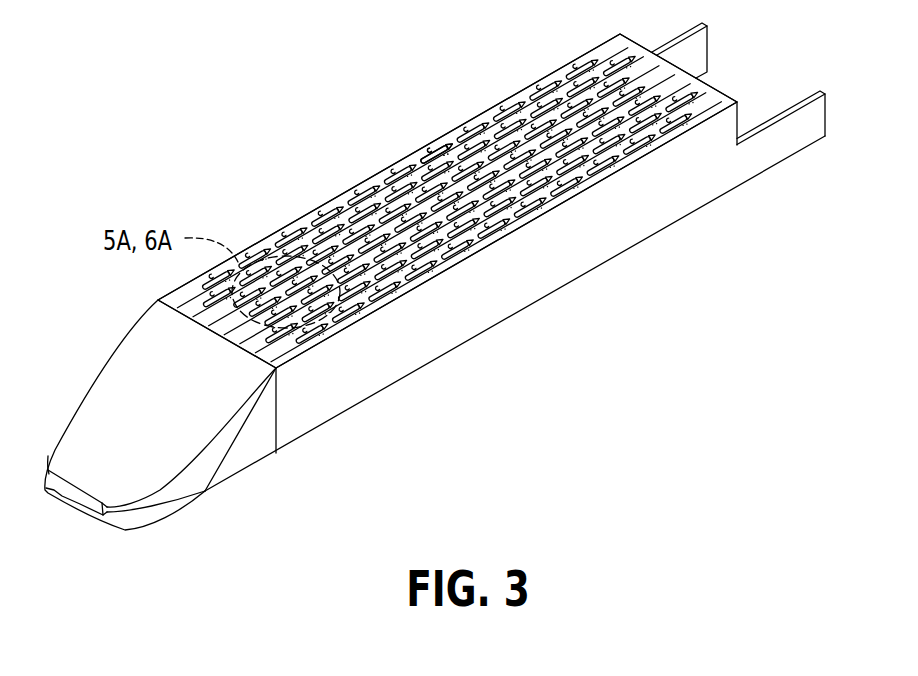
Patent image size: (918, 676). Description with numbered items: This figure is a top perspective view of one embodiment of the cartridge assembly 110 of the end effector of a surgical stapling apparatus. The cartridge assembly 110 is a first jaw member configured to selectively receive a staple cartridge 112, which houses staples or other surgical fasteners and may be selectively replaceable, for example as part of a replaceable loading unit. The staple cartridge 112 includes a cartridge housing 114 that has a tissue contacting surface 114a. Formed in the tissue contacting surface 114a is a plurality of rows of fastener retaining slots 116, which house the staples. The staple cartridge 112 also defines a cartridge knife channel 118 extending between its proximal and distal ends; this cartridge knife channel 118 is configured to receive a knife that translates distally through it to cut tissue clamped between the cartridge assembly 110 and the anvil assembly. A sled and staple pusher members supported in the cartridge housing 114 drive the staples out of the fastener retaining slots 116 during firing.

The cartridge assembly 110 is at (277, 86).
The staple cartridge 112 is at (481, 108).
The cartridge housing 114 is at (339, 191).
The tissue contacting surface 114a is at (428, 156).
The fastener retaining slots 116 is at (289, 230).
The cartridge knife channel 118 is at (688, 60).